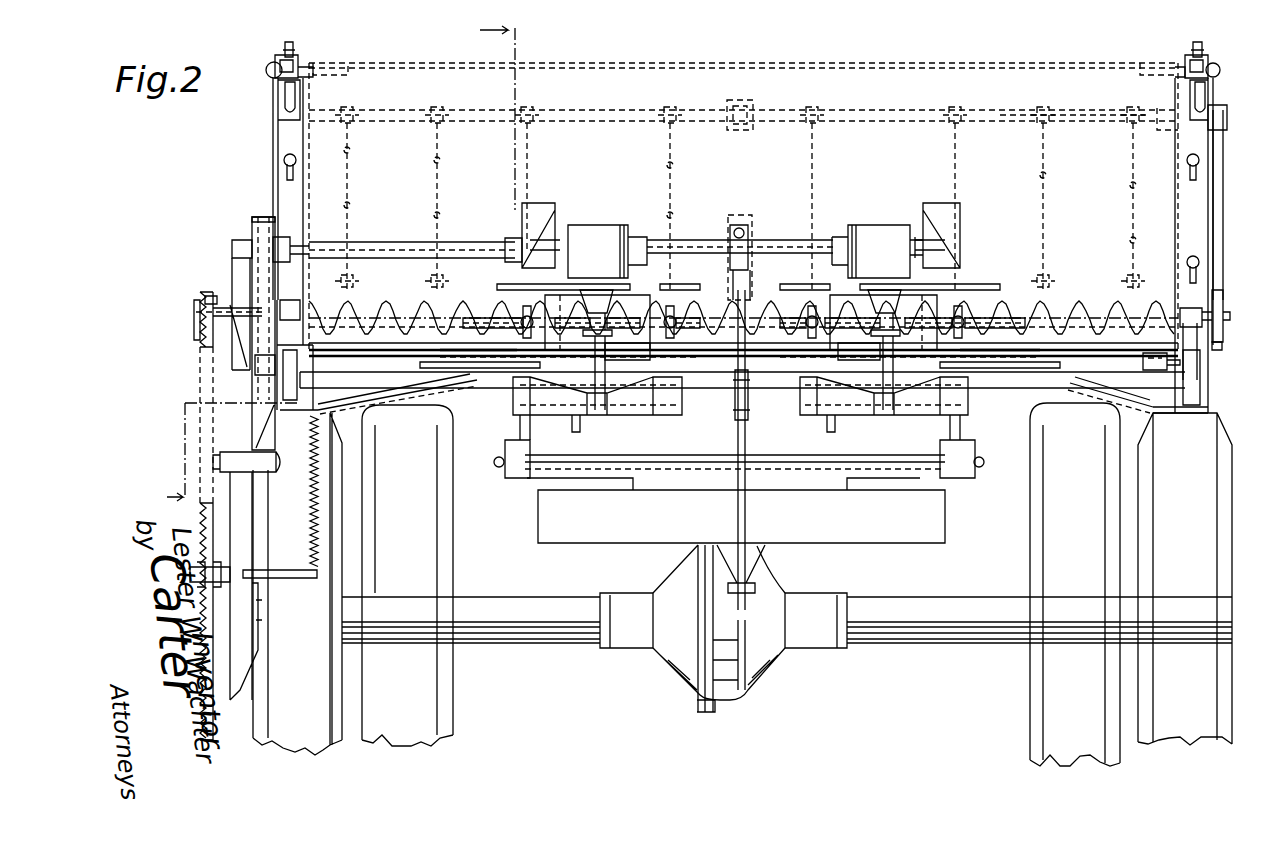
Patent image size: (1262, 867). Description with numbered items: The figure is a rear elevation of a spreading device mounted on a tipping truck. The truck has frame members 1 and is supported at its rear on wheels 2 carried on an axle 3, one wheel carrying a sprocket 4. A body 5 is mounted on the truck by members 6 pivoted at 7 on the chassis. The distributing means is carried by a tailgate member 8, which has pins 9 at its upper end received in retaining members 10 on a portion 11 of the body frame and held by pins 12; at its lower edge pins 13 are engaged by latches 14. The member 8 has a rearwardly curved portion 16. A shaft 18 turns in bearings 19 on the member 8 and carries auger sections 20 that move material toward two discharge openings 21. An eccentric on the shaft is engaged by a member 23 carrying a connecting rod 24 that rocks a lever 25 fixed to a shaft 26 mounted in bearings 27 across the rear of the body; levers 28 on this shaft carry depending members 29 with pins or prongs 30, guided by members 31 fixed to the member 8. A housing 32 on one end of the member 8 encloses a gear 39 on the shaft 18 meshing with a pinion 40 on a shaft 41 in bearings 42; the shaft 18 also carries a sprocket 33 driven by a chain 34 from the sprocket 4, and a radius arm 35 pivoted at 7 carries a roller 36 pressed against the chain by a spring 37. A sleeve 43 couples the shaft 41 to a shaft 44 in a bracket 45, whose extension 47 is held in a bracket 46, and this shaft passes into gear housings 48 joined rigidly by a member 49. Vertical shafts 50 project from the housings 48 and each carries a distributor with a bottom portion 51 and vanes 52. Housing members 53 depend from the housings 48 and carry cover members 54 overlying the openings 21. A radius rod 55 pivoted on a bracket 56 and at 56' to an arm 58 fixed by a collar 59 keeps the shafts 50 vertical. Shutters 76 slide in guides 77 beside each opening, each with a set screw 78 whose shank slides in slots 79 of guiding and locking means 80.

The frame members 1 is at (540, 534).
The wheels 2 is at (454, 531).
The axle 3 is at (920, 607).
The sprocket 4 is at (213, 735).
The body 5 is at (992, 388).
The members 6 is at (505, 452).
The pivot 7 is at (496, 467).
The member 8 is at (606, 77).
The pins 9 is at (268, 70).
The retaining members 10 is at (285, 56).
The portion of the body frame 11 is at (278, 133).
The pins 12 is at (294, 46).
The pins 13 is at (320, 404).
The latches 14 is at (298, 412).
The curved portion 16 is at (362, 344).
The shaft 18 is at (1223, 306).
The bearings 19 is at (1198, 308).
The auger sections 20 is at (372, 300).
The discharge openings 21 is at (625, 358).
The member 23 is at (1218, 347).
The connecting rod 24 is at (1223, 170).
The lever 25 is at (1225, 114).
The shaft 26 is at (1075, 110).
The bearings 27 is at (342, 108).
The levers 28 is at (355, 110).
The depending members 29 is at (350, 132).
The pins or prongs 30 is at (350, 190).
The members 31 is at (341, 278).
The housing 32 is at (232, 270).
The sprocket 33 is at (200, 337).
The chain 34 is at (200, 350).
The radius arm 35 is at (253, 524).
The roller 36 is at (222, 584).
The spring 37 is at (309, 494).
The gear 39 is at (255, 365).
The pinion 40 is at (262, 217).
The shaft 41 is at (292, 245).
The bearings 42 is at (232, 245).
The sleeve 43 is at (455, 241).
The shaft 44 is at (510, 244).
The bracket 45 is at (542, 205).
The bracket 46 is at (938, 205).
The extension 47 is at (960, 250).
The gear housings 48 is at (594, 225).
The member 49 is at (774, 240).
The vertical shaft 50 is at (594, 372).
The bottom portion 51 is at (576, 418).
The vanes 52 is at (652, 410).
The housing members 53 is at (608, 296).
The cover member 54 is at (560, 350).
The radius rod 55 is at (738, 508).
The bracket 56 is at (727, 395).
The pivot 56' is at (767, 569).
The arm 58 is at (748, 285).
The collar 59 is at (729, 232).
The shutter 76 is at (520, 318).
The guides 77 is at (497, 286).
The set screw 78 is at (500, 373).
The slots 79 is at (480, 330).
The guiding and locking means 80 is at (460, 325).